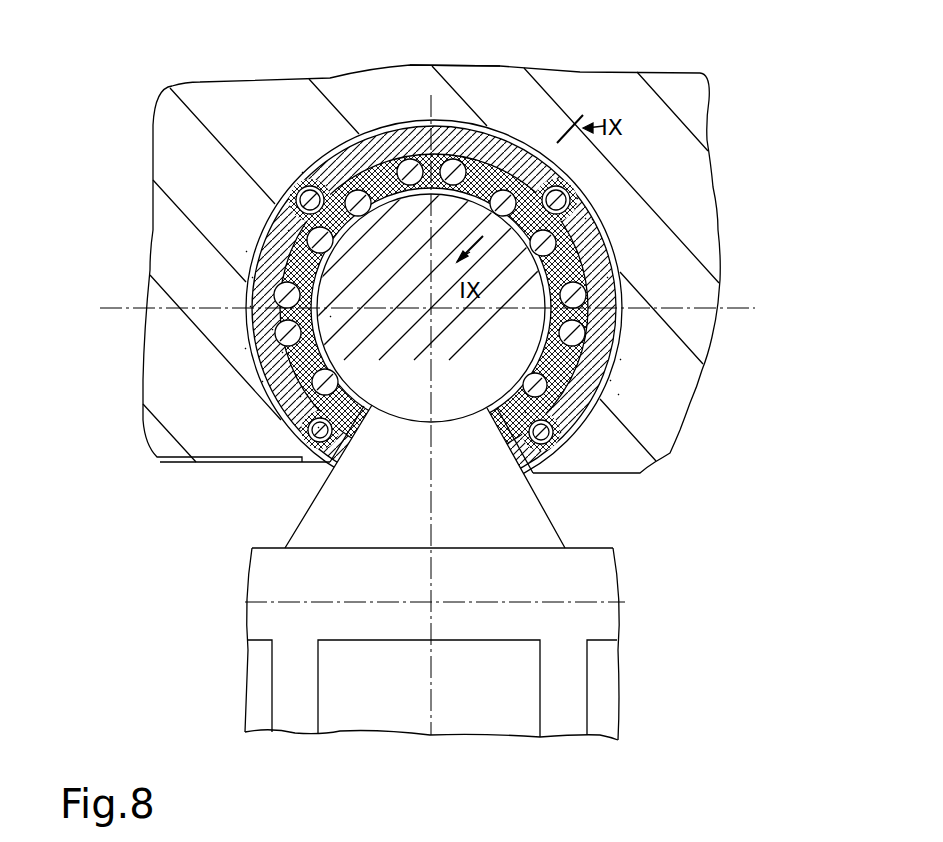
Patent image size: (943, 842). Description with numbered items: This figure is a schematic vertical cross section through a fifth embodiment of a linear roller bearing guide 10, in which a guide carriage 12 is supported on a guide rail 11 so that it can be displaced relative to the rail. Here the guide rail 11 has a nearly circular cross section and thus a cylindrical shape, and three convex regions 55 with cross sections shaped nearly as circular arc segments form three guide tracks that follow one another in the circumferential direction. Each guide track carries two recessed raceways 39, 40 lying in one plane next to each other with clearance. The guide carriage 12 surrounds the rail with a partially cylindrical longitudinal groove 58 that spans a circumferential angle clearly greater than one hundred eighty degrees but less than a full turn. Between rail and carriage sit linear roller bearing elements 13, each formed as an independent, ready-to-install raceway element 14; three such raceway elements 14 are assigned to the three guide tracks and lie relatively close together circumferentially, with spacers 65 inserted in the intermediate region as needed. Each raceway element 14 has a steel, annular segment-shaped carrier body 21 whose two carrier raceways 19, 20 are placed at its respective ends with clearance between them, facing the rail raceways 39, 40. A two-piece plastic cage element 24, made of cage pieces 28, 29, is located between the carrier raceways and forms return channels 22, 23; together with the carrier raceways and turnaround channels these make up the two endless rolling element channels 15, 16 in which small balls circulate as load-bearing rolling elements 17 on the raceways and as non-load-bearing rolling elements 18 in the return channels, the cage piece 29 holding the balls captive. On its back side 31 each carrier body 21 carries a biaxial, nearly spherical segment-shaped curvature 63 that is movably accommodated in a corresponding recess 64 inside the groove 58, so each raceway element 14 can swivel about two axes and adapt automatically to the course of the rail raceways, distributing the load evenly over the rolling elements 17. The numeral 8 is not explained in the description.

The outer ring portion 8 is at (252, 277).
The linear roller bearing guide 10 is at (622, 70).
The guide rail 11 is at (420, 472).
The guide carriage 12 is at (408, 90).
The linear roller bearing element 13 is at (616, 235).
The raceway element 14 is at (280, 396).
The rolling element channel 15 is at (245, 348).
The rolling element channel 16 is at (246, 251).
The load-bearing rolling elements 17 is at (592, 219).
The non-load-bearing rolling elements 18 is at (585, 330).
The carrier raceway 19 is at (300, 396).
The carrier raceway 20 is at (302, 172).
The carrier body 21 is at (262, 381).
The return channel 22 is at (272, 329).
The return channel 23 is at (250, 306).
The cage element 24 is at (288, 230).
The cage piece 28 is at (282, 352).
The cage piece 29 is at (330, 316).
The back side 31 is at (610, 380).
The raceway 39 is at (400, 284).
The raceway 40 is at (408, 418).
The convex regions 55 is at (476, 155).
The partially cylindrical longitudinal groove 58 is at (378, 124).
The curvature 63 is at (288, 353).
The recess 64 is at (83, 423).
The spacers 65 is at (305, 187).